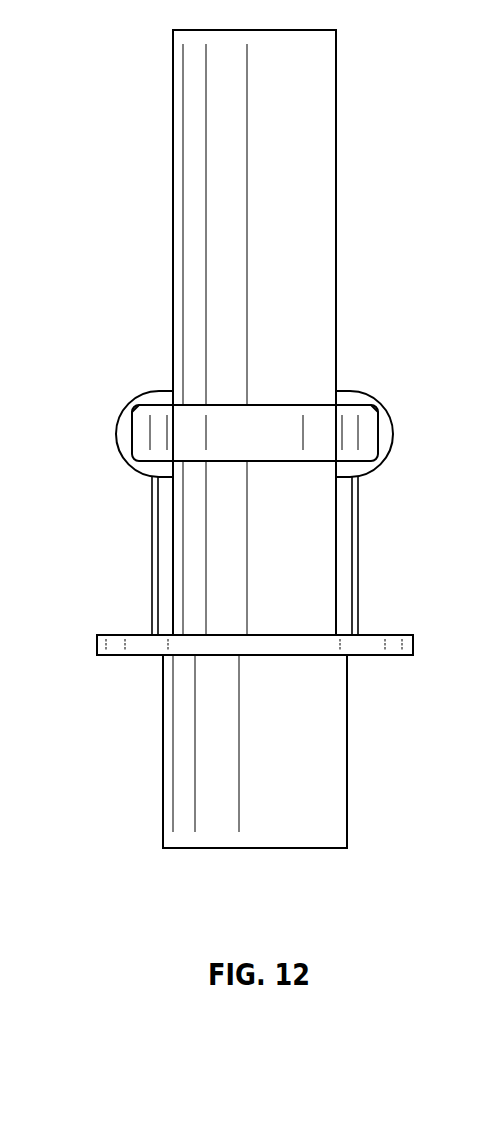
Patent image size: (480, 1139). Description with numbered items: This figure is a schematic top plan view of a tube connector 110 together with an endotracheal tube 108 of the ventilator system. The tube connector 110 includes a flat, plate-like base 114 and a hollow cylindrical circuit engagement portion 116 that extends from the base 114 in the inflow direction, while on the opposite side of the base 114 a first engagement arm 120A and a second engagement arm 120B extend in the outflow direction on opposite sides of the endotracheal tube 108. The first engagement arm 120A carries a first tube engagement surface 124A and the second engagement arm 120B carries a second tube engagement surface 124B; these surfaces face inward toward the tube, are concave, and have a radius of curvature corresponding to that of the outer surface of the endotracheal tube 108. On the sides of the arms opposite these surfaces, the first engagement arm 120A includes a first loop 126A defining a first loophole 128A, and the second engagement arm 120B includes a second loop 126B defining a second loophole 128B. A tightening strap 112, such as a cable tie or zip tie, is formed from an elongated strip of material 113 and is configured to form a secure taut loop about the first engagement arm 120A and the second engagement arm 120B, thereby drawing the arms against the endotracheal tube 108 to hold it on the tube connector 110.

The endotracheal tube 108 is at (306, 80).
The tube connector 110 is at (415, 640).
The tightening strap 112 is at (351, 416).
The strip of material 113 is at (270, 422).
The base 114 is at (120, 645).
The circuit engagement portion 116 is at (183, 737).
The first engagement arm 120A is at (361, 546).
The second engagement arm 120B is at (149, 563).
The first tube engagement surface 124A is at (336, 395).
The second tube engagement surface 124B is at (174, 395).
The first loop 126A is at (387, 426).
The second loop 126B is at (130, 458).
The first loophole 128A is at (378, 416).
The second loophole 128B is at (133, 420).